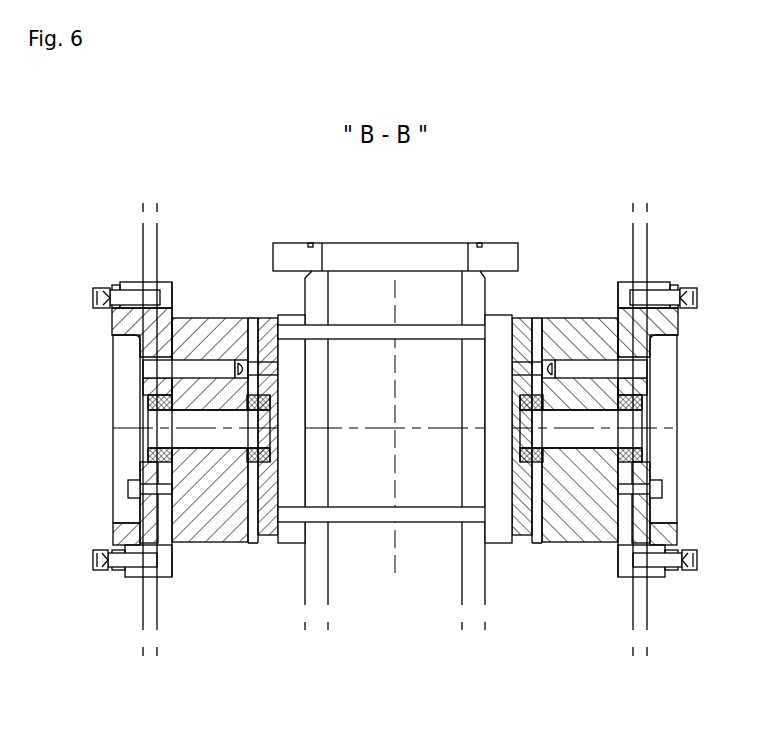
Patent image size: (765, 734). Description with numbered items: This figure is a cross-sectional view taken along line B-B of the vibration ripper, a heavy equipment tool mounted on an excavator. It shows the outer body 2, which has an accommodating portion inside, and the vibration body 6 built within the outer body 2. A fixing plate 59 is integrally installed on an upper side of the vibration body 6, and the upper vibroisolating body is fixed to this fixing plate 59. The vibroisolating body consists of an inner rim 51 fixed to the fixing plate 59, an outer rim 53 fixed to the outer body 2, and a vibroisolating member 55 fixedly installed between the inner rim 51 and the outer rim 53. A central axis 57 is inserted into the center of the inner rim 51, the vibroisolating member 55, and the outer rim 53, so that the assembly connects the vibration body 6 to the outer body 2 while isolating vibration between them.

The outer body 2 is at (143, 246).
The vibration body 6 is at (353, 258).
The inner rim 51 is at (272, 535).
The outer rim 53 is at (113, 533).
The vibroisolating member 55 is at (205, 332).
The central axis 57 is at (208, 437).
The fixing plate 59 is at (290, 360).